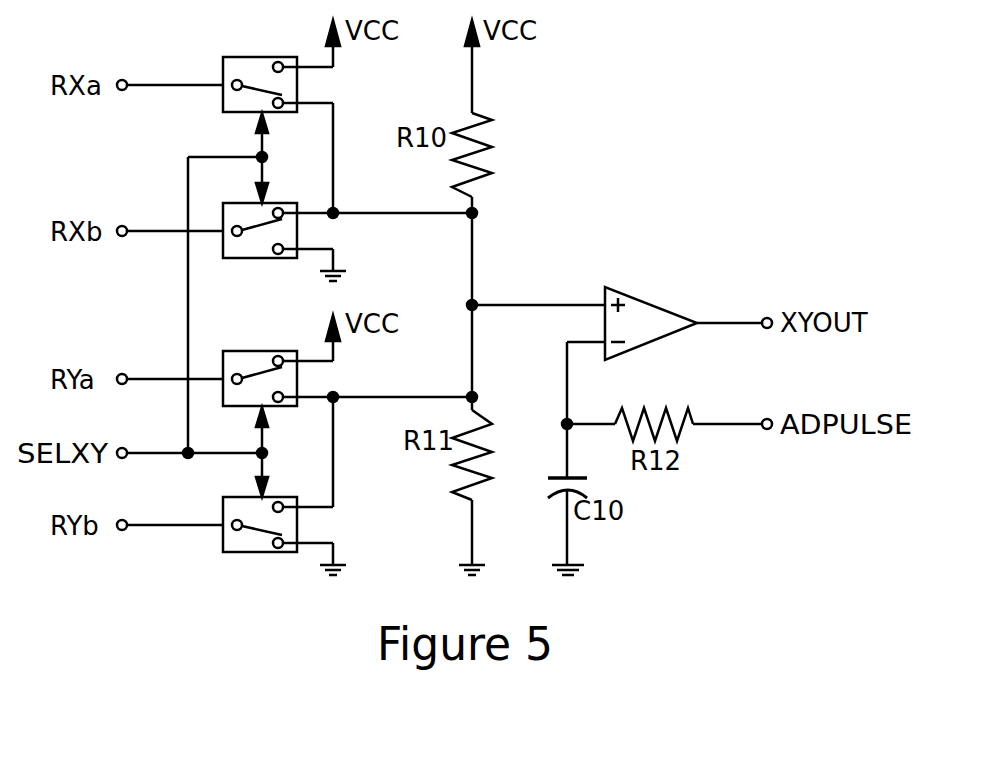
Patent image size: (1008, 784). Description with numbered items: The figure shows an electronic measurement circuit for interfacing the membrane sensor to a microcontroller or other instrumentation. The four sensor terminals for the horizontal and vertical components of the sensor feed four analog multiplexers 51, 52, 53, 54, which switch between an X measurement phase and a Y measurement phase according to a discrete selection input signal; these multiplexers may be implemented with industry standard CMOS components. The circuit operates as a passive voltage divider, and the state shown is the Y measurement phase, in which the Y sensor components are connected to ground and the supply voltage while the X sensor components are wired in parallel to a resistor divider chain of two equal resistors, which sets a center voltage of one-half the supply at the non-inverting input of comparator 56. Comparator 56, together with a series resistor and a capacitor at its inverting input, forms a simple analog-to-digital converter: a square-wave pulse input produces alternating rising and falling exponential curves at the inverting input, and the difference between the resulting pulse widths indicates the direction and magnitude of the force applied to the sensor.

The analog multiplexer 51 is at (299, 138).
The analog multiplexer 52 is at (299, 288).
The analog multiplexer 53 is at (299, 435).
The analog multiplexer 54 is at (299, 582).
The comparator 56 is at (688, 365).